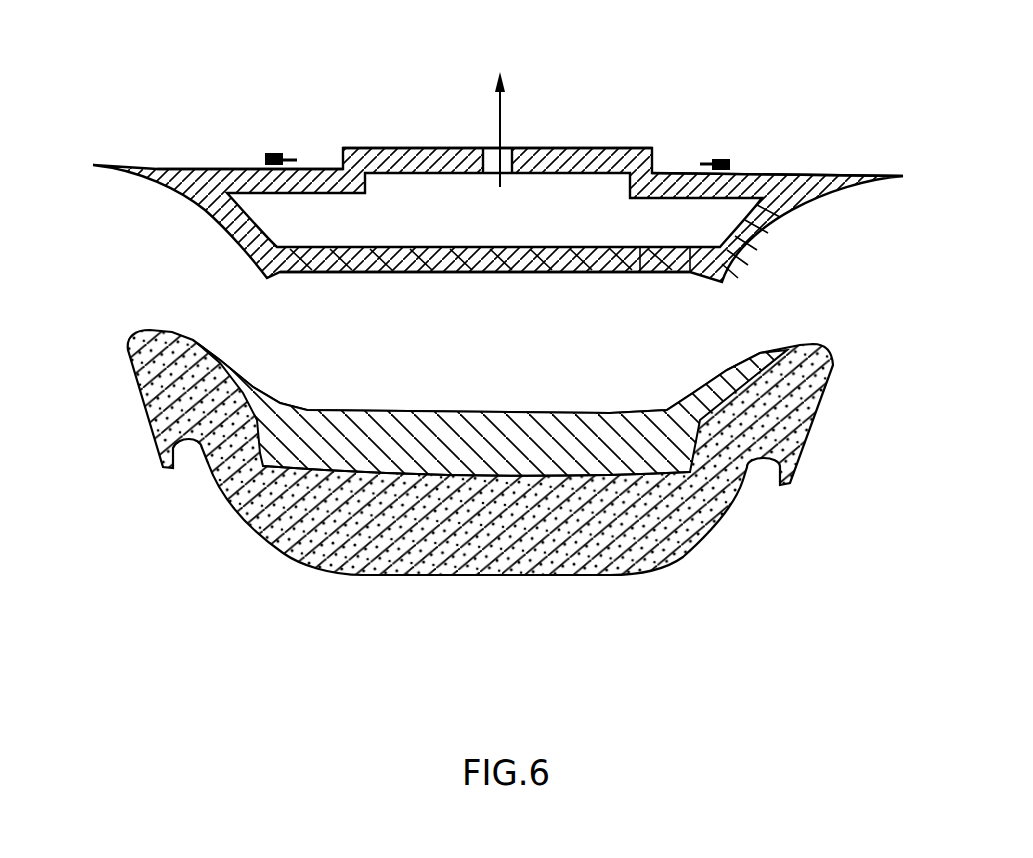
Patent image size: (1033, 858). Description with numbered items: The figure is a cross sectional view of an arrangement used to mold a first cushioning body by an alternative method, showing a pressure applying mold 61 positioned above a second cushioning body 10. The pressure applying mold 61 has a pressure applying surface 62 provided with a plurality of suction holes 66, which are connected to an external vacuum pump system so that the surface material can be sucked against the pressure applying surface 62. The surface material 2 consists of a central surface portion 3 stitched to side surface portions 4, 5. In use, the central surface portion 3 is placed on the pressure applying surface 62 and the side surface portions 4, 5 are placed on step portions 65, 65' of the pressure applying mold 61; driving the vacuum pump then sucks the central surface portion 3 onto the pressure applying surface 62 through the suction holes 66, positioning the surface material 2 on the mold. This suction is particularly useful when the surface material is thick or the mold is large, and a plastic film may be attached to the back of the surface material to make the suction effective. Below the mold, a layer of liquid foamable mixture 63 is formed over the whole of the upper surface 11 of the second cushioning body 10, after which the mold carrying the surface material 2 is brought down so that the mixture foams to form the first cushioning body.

The surface material 2 is at (346, 281).
The central surface portion 3 is at (480, 270).
The side surface portion 4 is at (767, 183).
The side surface portion 5 is at (240, 167).
The second cushioning body 10 is at (418, 550).
The upper surface 11 is at (290, 478).
The pressure applying mold 61 is at (562, 150).
The pressure applying surface 62 is at (765, 230).
The liquid foamable mixture 63 is at (557, 477).
The step portion 65 is at (777, 109).
The step portion 65' is at (250, 96).
The suction hole 66 is at (667, 273).